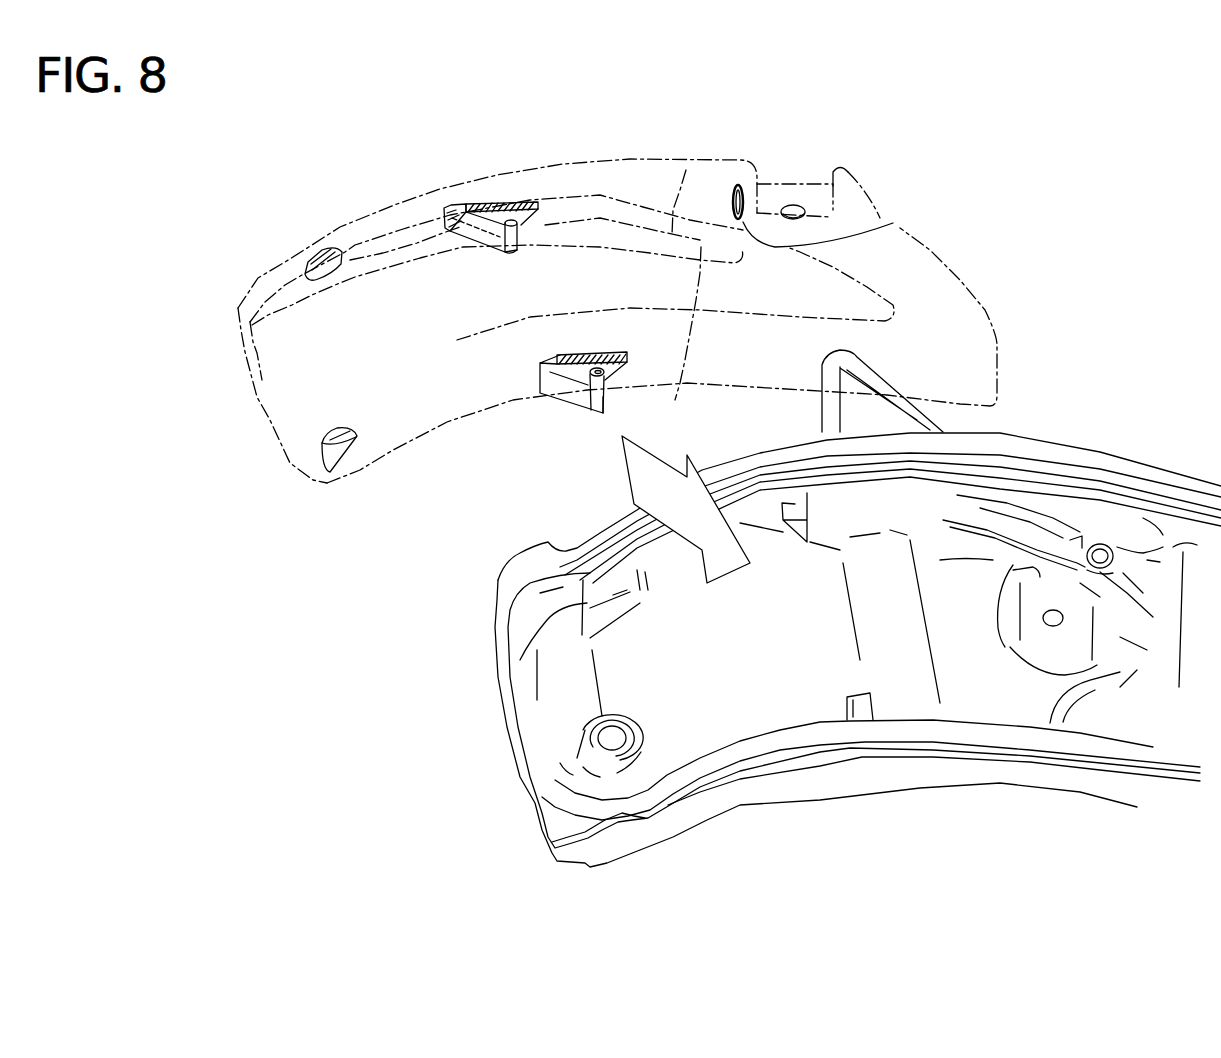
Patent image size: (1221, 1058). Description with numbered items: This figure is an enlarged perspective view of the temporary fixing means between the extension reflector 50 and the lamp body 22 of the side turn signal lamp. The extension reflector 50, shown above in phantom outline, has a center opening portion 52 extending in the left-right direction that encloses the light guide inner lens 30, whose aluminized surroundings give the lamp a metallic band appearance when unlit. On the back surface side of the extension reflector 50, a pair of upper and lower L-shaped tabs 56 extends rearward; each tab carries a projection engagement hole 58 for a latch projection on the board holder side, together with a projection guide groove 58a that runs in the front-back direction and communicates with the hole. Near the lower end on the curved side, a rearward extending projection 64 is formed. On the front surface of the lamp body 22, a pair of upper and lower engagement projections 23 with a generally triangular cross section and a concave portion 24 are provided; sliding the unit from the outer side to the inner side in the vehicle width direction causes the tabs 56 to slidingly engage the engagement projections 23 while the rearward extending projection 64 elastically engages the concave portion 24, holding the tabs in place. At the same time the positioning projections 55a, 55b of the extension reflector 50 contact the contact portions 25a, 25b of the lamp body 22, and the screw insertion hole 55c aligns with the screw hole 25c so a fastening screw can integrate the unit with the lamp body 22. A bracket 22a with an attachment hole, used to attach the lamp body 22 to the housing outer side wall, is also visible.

The extension reflector 50 is at (359, 208).
The center opening portion 52 is at (687, 168).
The light guide inner lens 30 is at (676, 339).
The positioning projection 55a is at (320, 280).
The positioning projection 55b is at (843, 228).
The screw insertion hole 55c is at (797, 205).
The L-shaped tab 56 is at (450, 207).
The projection engagement hole 58 is at (513, 220).
The projection guide groove 58a is at (530, 243).
The rearward extending projection 64 is at (325, 473).
The lamp body 22 is at (1115, 443).
The bracket 22a is at (890, 387).
The engagement projection 23 is at (793, 505).
The concave portion 24 is at (600, 722).
The contact portion 25a is at (610, 587).
The contact portion 25b is at (1047, 533).
The screw hole 25c is at (1107, 547).